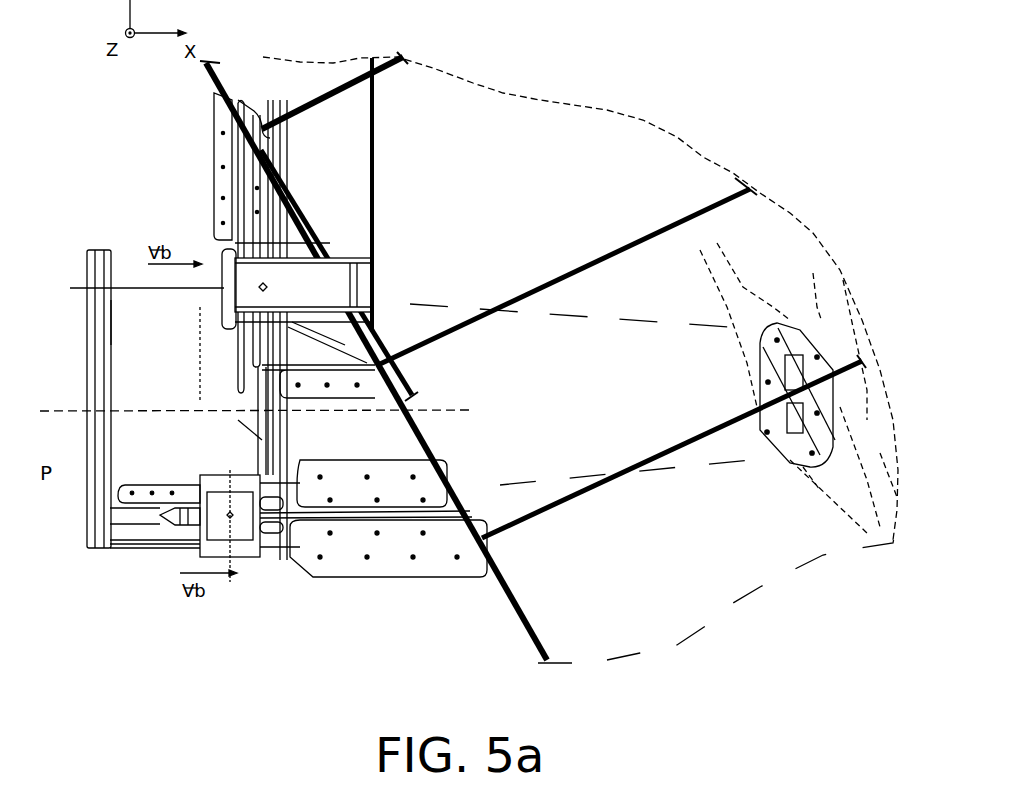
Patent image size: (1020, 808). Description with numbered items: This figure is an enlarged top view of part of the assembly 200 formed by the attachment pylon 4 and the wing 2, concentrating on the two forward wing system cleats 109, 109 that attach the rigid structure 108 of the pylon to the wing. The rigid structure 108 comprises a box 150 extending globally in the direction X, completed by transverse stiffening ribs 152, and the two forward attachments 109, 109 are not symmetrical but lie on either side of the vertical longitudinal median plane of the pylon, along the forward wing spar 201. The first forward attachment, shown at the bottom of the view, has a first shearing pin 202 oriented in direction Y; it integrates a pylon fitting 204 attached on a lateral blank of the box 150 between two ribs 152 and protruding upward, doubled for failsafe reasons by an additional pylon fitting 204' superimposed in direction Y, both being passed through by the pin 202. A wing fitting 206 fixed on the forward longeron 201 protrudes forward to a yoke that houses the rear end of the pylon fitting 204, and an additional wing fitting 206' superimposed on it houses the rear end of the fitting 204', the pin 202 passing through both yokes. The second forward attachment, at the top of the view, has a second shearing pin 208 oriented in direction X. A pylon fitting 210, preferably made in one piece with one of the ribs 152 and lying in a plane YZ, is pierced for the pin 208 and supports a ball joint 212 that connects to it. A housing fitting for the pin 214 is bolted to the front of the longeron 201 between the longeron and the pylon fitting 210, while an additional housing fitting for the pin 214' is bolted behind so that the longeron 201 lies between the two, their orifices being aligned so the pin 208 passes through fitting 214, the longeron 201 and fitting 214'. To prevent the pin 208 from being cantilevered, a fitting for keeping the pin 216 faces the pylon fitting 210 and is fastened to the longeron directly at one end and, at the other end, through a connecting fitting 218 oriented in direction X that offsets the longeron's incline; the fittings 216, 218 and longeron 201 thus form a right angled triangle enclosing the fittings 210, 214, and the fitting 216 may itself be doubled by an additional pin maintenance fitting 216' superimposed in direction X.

The wing 2 is at (560, 100).
The attachment pylon 4 is at (95, 185).
The rigid structure 108 is at (85, 312).
The forward wing system cleat 109 is at (415, 217).
The box 150 is at (137, 367).
The transverse stiffening rib 152 is at (100, 340).
The assembly 200 is at (124, 628).
The forward wing spar 201 is at (427, 433).
The first shearing pin 202 is at (205, 553).
The pylon fitting 204 is at (155, 497).
The additional pylon fitting 204' is at (145, 545).
The wing fitting 206 is at (372, 465).
The additional wing fitting 206' is at (388, 576).
The second shearing pin 208 is at (275, 268).
The pylon fitting 210 is at (230, 240).
The ball joint 212 is at (303, 200).
The housing fitting for the pin 214 is at (358, 275).
The additional housing fitting for the pin 214' is at (359, 95).
The fitting for keeping the pin 216 is at (186, 166).
The additional pin maintenance fitting 216' is at (332, 195).
The connecting fitting 218 is at (347, 393).